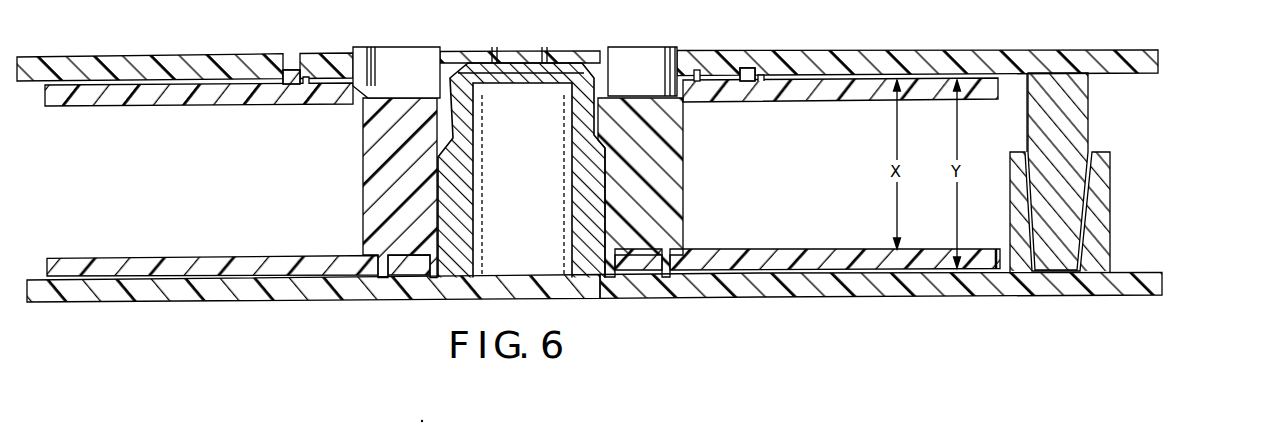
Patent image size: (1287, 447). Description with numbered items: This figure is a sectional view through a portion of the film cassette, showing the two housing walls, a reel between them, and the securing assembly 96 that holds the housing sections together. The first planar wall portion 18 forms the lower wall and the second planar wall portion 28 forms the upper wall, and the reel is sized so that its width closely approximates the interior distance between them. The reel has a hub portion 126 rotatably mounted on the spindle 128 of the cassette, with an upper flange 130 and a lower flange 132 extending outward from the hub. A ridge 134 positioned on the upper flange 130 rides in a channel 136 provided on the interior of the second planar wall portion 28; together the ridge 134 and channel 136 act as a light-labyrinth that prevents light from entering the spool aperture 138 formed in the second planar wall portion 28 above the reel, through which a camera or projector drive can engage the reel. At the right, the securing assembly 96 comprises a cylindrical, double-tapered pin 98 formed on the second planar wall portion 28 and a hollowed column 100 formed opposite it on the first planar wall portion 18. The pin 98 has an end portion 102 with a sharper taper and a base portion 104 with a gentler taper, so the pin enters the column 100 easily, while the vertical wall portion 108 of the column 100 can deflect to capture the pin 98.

The first planar wall portion 18 is at (775, 299).
The second planar wall portion 28 is at (892, 62).
The securing assembly 96 is at (1160, 160).
The pin 98 is at (1103, 120).
The hollowed column 100 is at (1122, 260).
The end portion 102 is at (1050, 235).
The base portion 104 is at (1037, 117).
The vertical wall portion 108 is at (1095, 213).
The hub portion 126 is at (408, 163).
The spindle 128 is at (470, 178).
The upper flange 130 is at (242, 104).
The lower flange 132 is at (159, 258).
The ridge 134 is at (280, 70).
The channel 136 is at (305, 77).
The spool aperture 138 is at (697, 68).